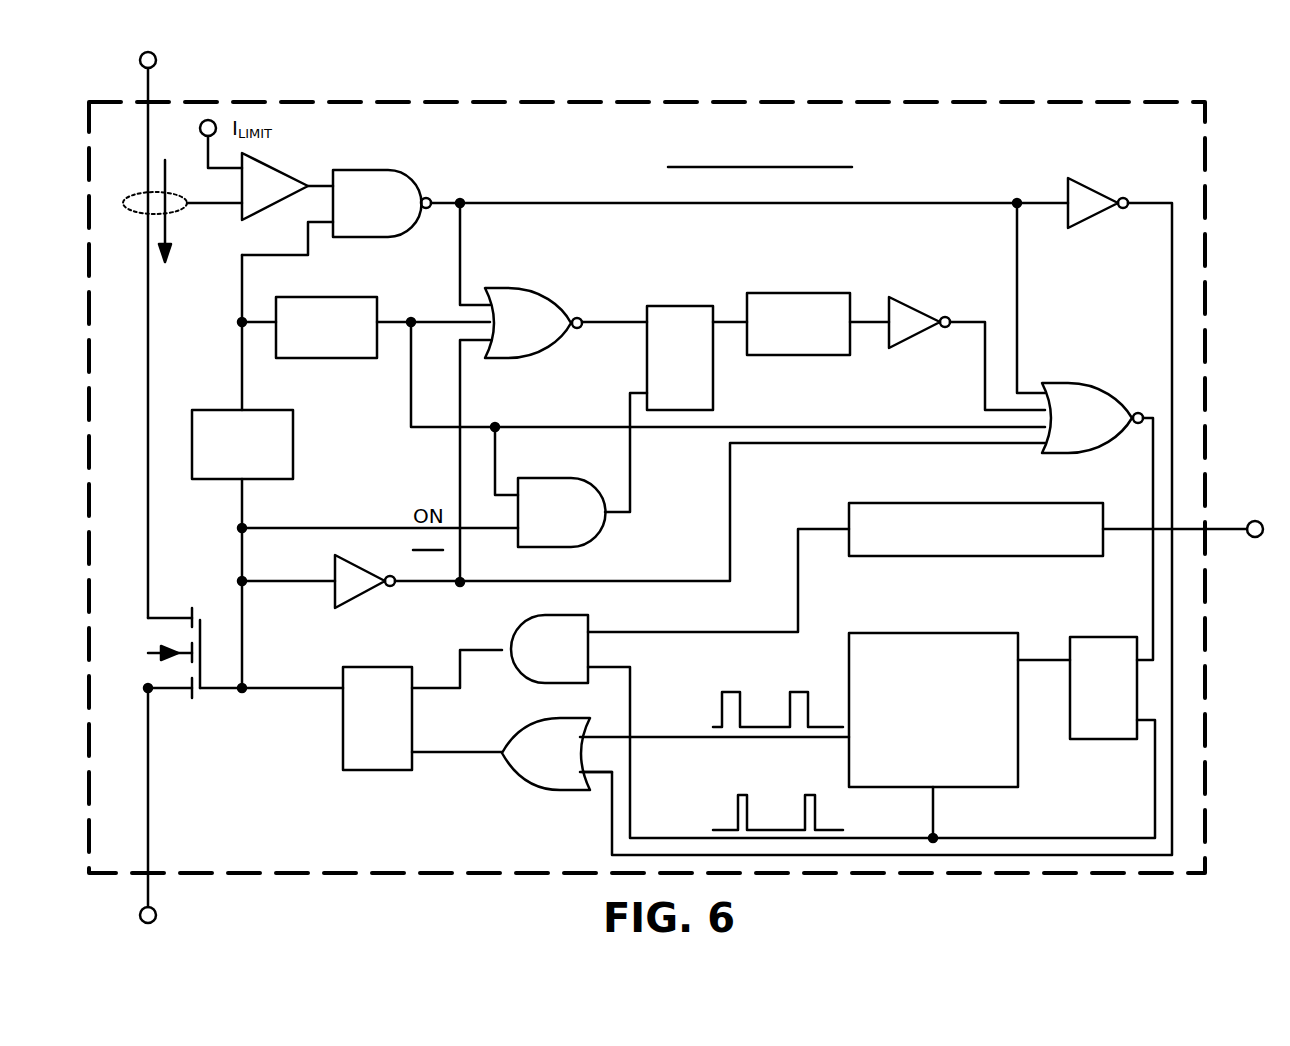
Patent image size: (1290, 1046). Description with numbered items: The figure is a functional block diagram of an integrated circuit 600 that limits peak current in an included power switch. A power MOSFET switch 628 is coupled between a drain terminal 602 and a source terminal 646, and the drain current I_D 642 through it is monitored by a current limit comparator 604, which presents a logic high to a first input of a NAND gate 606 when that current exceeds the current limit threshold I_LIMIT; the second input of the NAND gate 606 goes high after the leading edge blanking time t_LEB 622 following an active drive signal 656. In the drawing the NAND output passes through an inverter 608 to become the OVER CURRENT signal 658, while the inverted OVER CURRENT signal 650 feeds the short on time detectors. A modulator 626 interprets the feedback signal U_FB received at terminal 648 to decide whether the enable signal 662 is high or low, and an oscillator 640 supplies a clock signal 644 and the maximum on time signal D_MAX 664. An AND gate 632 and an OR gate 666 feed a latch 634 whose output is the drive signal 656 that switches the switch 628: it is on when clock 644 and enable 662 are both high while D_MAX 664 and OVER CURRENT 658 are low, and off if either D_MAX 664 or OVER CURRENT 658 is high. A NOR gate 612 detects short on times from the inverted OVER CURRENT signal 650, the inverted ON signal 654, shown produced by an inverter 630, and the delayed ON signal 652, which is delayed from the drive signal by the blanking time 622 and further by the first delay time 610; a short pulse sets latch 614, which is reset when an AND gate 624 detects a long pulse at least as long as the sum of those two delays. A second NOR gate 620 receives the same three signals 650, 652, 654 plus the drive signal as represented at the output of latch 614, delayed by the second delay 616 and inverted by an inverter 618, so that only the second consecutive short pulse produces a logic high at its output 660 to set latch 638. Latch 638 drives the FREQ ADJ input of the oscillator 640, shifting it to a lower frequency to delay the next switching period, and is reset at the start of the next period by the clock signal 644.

The integrated circuit 600 is at (755, 94).
The drain terminal 602 is at (140, 62).
The current limit comparator 604 is at (282, 163).
The NAND gate 606 is at (336, 212).
The inverter 608 is at (1090, 177).
The delay time td1 610 is at (363, 295).
The NOR gate 612 is at (531, 302).
The latch 614 is at (678, 302).
The delay td2 616 is at (800, 272).
The inverter 618 is at (912, 298).
The NOR gate 620 is at (1080, 328).
The leading edge blanking time tLEB 622 is at (300, 445).
The AND gate 624 is at (571, 470).
The modulator 626 is at (958, 498).
The power MOSFET switch 628 is at (167, 608).
The inverter 630 is at (372, 593).
The AND gate 632 is at (549, 649).
The latch 634 is at (333, 752).
The latch 638 is at (1105, 627).
The oscillator 640 is at (1028, 766).
The drain current 642 is at (183, 248).
The clock signal 644 is at (706, 830).
The source terminal 646 is at (140, 907).
The terminal 648 is at (1230, 537).
The inverted OVER CURRENT signal 650 is at (571, 196).
The delayed ON signal 652 is at (545, 418).
The inverted ON signal 654 is at (645, 575).
The drive signal 656 is at (975, 357).
The OVER CURRENT signal 658 is at (1163, 228).
The output of NOR gate 620 660 is at (1146, 450).
The enable signal 662 is at (803, 508).
The maximum on time signal DMAX 664 is at (706, 727).
The OR gate 666 is at (675, 754).